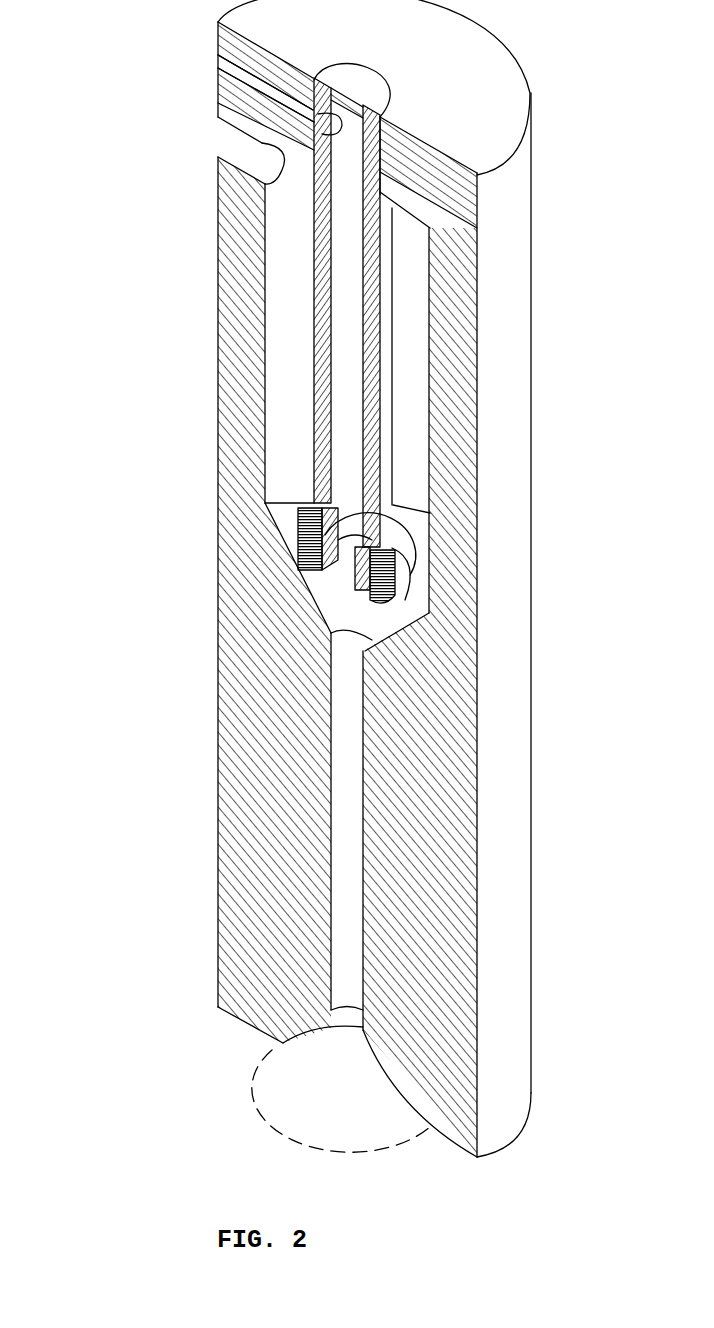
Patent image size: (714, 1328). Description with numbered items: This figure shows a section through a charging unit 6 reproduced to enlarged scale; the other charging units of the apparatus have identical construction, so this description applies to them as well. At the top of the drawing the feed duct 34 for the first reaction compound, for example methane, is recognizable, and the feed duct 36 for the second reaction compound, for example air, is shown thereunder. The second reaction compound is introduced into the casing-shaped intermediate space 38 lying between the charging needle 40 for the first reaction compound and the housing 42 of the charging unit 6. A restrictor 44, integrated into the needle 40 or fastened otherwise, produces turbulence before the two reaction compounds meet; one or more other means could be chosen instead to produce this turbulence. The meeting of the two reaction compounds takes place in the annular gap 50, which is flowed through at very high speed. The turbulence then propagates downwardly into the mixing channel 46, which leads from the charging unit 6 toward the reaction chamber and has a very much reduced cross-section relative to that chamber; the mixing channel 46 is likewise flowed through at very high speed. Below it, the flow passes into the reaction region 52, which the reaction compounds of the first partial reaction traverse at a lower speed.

The charging unit 6 is at (535, 748).
The feed duct 34 is at (222, 62).
The feed duct 36 is at (241, 153).
The casing-shaped intermediate space 38 is at (290, 295).
The charging needle 40 is at (327, 403).
The housing 42 is at (452, 539).
The restrictor 44 is at (317, 533).
The mixing channel 46 is at (347, 807).
The annular gap 50 is at (298, 550).
The reaction region 52 is at (344, 1066).